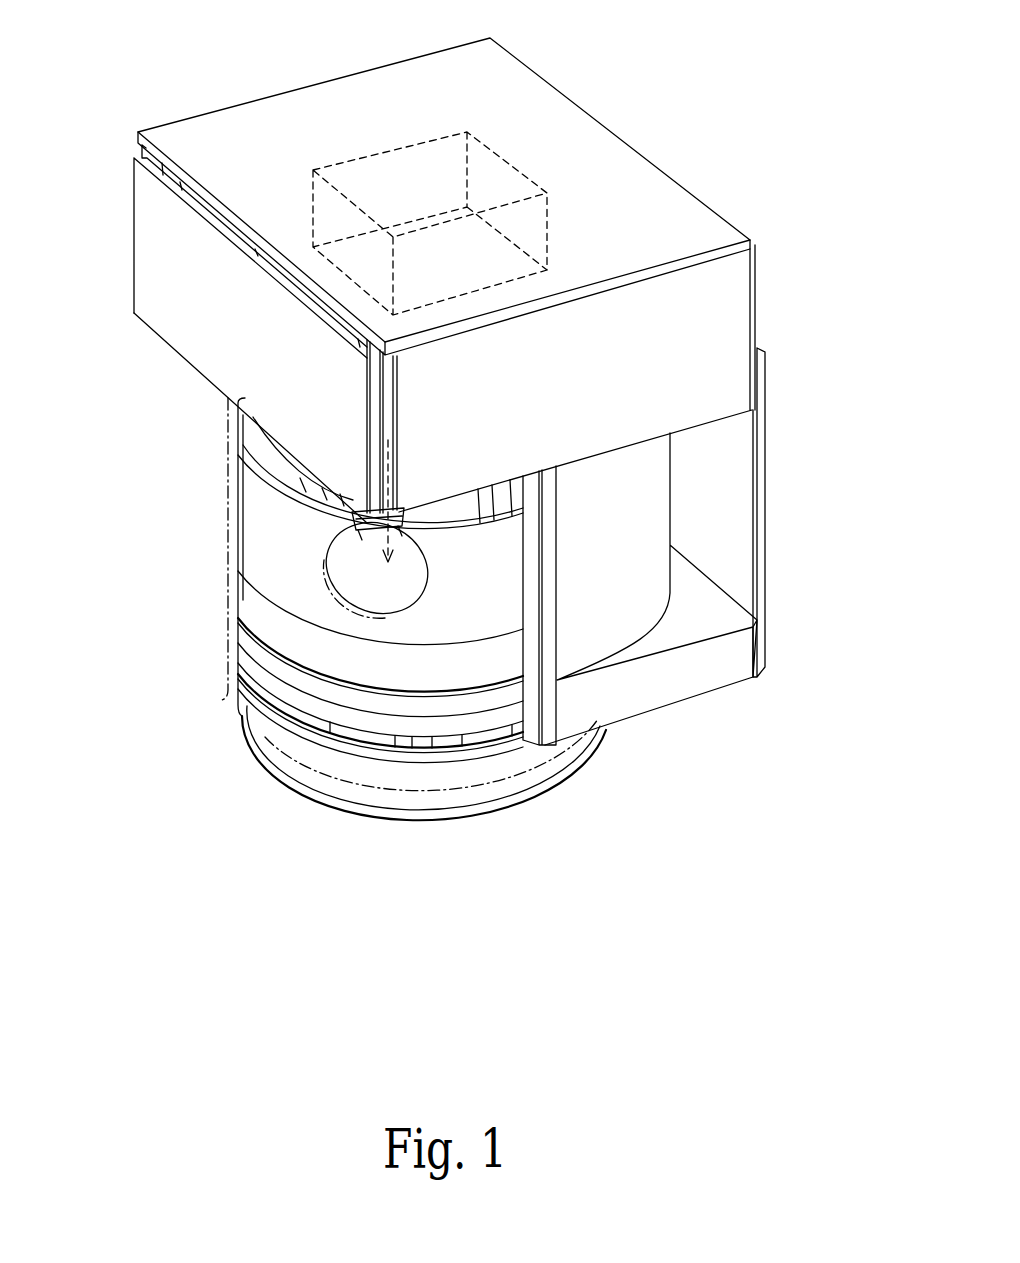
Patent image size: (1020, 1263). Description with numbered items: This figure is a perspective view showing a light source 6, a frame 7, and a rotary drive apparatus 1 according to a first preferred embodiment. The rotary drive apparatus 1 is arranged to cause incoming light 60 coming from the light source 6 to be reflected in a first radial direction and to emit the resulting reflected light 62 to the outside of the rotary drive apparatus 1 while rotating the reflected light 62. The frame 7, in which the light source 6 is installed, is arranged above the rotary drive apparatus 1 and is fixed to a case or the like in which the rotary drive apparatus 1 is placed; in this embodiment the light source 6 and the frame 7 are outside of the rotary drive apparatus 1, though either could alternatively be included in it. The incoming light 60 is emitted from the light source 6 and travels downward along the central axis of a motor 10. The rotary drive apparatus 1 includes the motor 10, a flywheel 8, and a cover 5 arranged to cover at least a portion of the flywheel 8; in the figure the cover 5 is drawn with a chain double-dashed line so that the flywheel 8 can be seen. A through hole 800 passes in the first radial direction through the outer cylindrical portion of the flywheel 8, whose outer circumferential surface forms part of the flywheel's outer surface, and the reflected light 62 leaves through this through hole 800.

The rotary drive apparatus 1 is at (124, 478).
The cover 5 is at (226, 650).
The light source 6 is at (363, 183).
The frame 7 is at (673, 233).
The flywheel 8 is at (199, 534).
The motor 10 is at (200, 735).
The incoming light 60 is at (390, 487).
The reflected light 62 is at (383, 573).
The through hole 800 is at (407, 587).